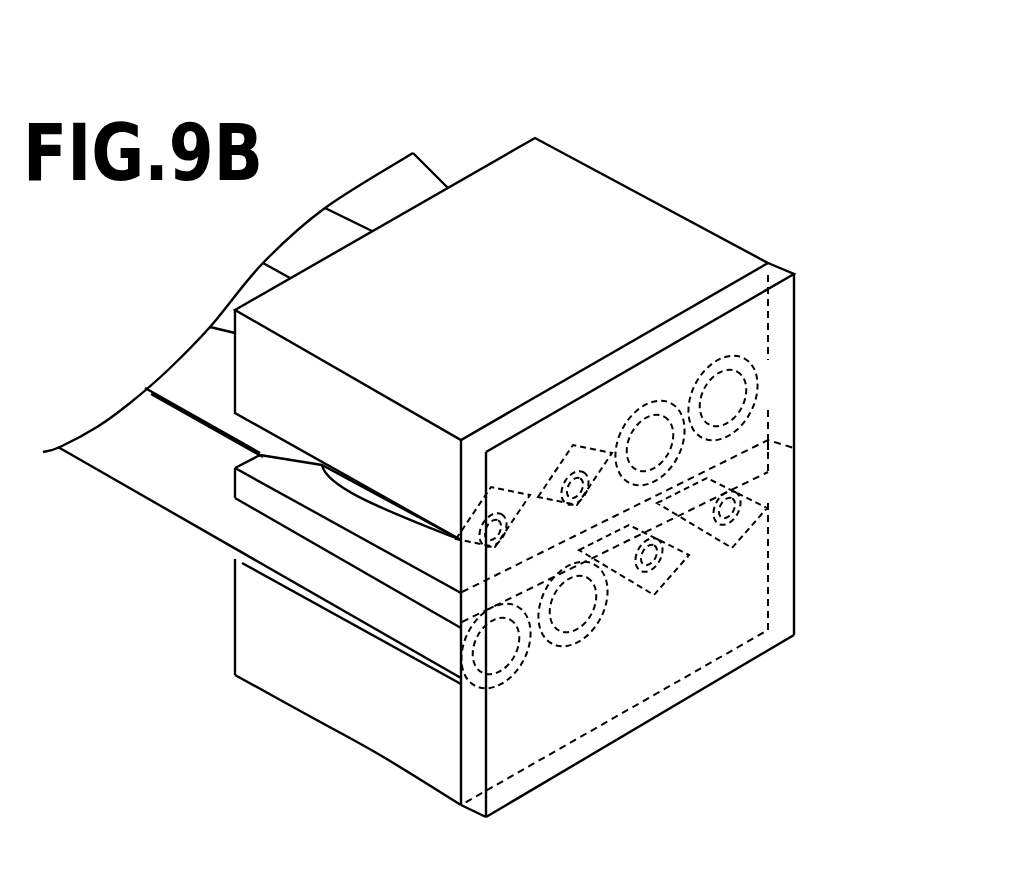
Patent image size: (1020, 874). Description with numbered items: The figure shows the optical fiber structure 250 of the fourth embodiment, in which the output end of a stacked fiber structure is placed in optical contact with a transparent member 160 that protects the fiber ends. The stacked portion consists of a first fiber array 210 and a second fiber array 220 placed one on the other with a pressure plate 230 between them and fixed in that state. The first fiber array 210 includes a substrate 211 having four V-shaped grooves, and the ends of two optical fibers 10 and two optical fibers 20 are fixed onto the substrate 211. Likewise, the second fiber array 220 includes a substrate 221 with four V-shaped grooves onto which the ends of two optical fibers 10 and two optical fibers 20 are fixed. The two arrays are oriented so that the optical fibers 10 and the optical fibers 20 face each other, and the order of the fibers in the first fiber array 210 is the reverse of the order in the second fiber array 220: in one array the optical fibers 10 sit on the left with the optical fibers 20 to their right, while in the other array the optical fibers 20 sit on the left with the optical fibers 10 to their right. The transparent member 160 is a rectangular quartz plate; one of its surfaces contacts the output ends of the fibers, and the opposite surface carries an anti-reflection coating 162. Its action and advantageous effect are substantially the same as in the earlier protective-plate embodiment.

The optical fiber 10 is at (527, 493).
The optical fiber 20 is at (762, 385).
The transparent member 160 is at (680, 495).
The anti-reflection coating 162 is at (743, 670).
The first fiber array 210 is at (577, 451).
The substrate 211 is at (602, 193).
The second fiber array 220 is at (577, 708).
The substrate 221 is at (381, 758).
The pressure plate 230 is at (770, 442).
The optical fiber structure 250 is at (497, 93).